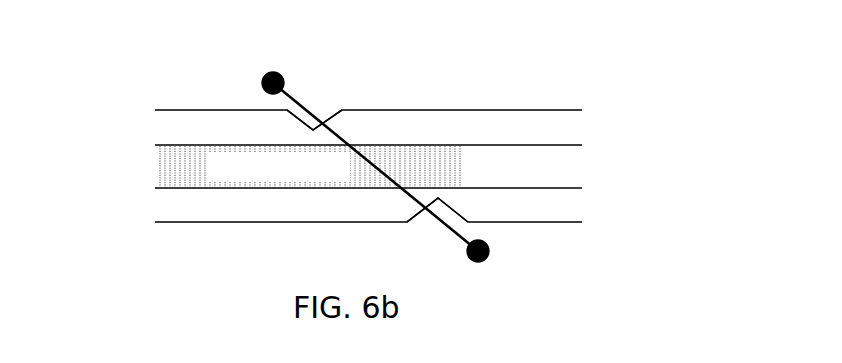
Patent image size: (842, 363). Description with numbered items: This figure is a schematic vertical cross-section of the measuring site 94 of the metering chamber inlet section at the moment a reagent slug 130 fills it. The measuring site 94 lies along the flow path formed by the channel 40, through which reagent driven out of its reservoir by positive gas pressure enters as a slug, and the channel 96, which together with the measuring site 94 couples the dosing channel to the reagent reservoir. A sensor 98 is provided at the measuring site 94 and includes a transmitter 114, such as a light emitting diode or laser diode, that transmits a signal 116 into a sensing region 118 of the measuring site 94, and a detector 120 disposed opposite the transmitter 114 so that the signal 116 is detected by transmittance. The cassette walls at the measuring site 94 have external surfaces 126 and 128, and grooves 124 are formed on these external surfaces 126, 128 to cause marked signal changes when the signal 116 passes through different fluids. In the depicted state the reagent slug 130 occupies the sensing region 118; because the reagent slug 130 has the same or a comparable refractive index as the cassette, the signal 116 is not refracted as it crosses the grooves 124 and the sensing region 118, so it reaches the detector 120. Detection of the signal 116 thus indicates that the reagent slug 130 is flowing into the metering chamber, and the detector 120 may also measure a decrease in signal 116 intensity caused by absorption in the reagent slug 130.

The measuring site 94 is at (126, 70).
The sensor 98 is at (231, 88).
The channel 40 is at (176, 145).
The reagent slug 130 is at (185, 170).
The transmitter 114 is at (288, 80).
The signal 116 is at (310, 102).
The grooves 124 is at (332, 113).
The external surface 126 is at (485, 110).
The channel 96 is at (551, 190).
The external surface 128 is at (560, 222).
The detector 120 is at (491, 250).
The sensing region 118 is at (353, 235).